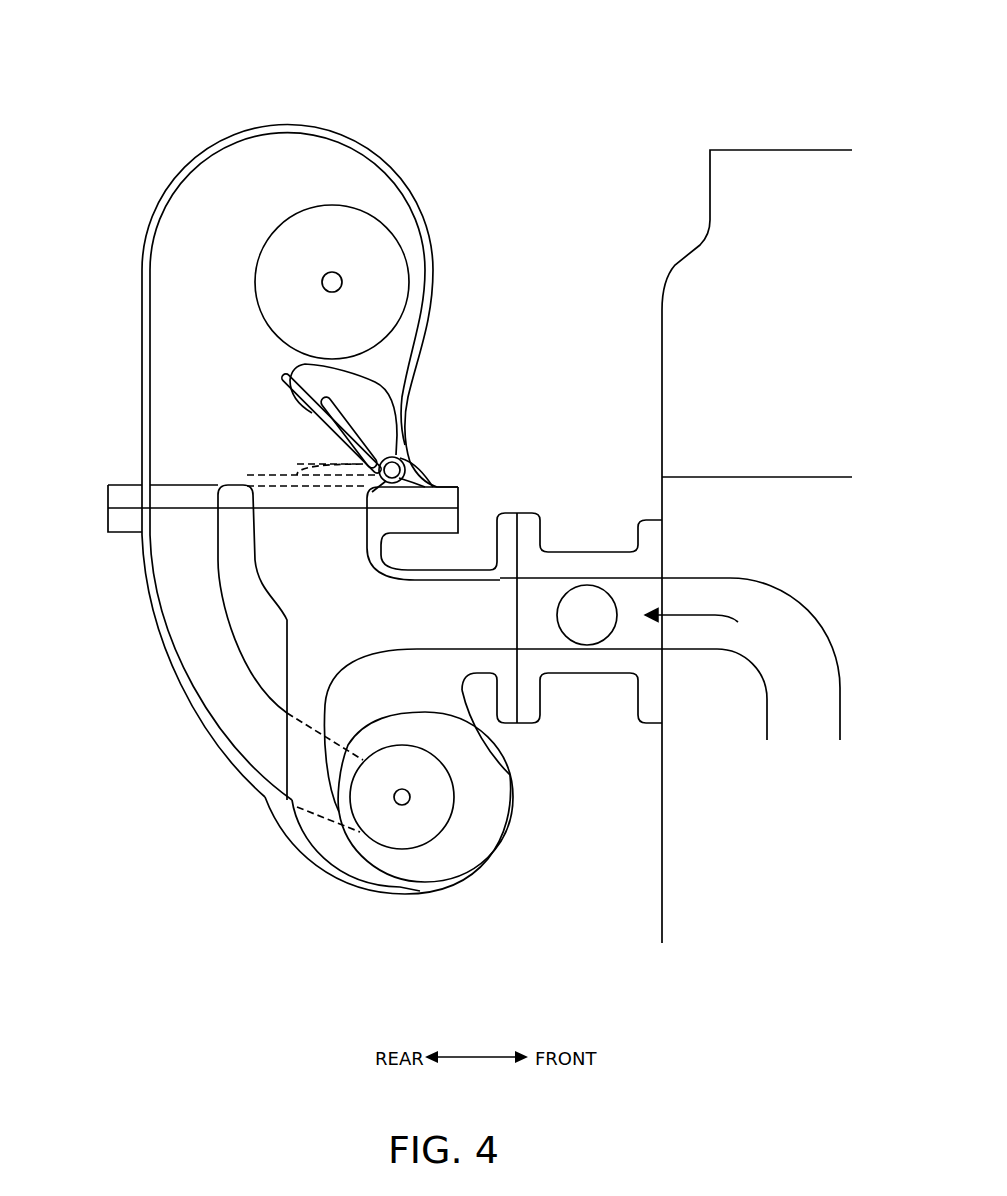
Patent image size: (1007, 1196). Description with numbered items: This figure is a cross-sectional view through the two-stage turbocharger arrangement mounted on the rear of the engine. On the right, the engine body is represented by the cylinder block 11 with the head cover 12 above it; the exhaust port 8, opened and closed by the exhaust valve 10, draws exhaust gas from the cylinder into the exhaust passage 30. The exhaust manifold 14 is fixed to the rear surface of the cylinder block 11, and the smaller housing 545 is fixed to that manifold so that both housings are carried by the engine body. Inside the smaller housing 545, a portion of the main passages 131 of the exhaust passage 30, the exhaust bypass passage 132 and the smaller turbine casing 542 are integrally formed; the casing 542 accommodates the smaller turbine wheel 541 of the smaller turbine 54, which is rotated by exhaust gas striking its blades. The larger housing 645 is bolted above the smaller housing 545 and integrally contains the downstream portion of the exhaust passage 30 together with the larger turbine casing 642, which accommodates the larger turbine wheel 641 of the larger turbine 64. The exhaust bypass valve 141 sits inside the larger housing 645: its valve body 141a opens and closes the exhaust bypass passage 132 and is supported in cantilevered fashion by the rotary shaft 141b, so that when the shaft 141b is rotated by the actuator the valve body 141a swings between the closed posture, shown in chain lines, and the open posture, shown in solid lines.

The larger turbine 64 is at (401, 110).
The larger turbine casing 642 is at (390, 161).
The larger turbine wheel 641 is at (396, 232).
The larger housing 645 is at (140, 372).
The exhaust bypass valve 141 is at (522, 372).
The valve body 141a is at (390, 388).
The rotary shaft 141b is at (417, 466).
The exhaust passage 30 is at (452, 626).
The exhaust bypass passage 132 is at (283, 577).
The main passages 131 is at (184, 640).
The smaller housing 545 is at (186, 692).
The smaller turbine 54 is at (484, 888).
The smaller turbine casing 542 is at (373, 883).
The smaller turbine wheel 541 is at (453, 783).
The exhaust manifold 14 is at (592, 553).
The exhaust port 8 is at (773, 606).
The exhaust valve 10 is at (775, 134).
The head cover 12 is at (672, 263).
The cylinder block 11 is at (660, 478).